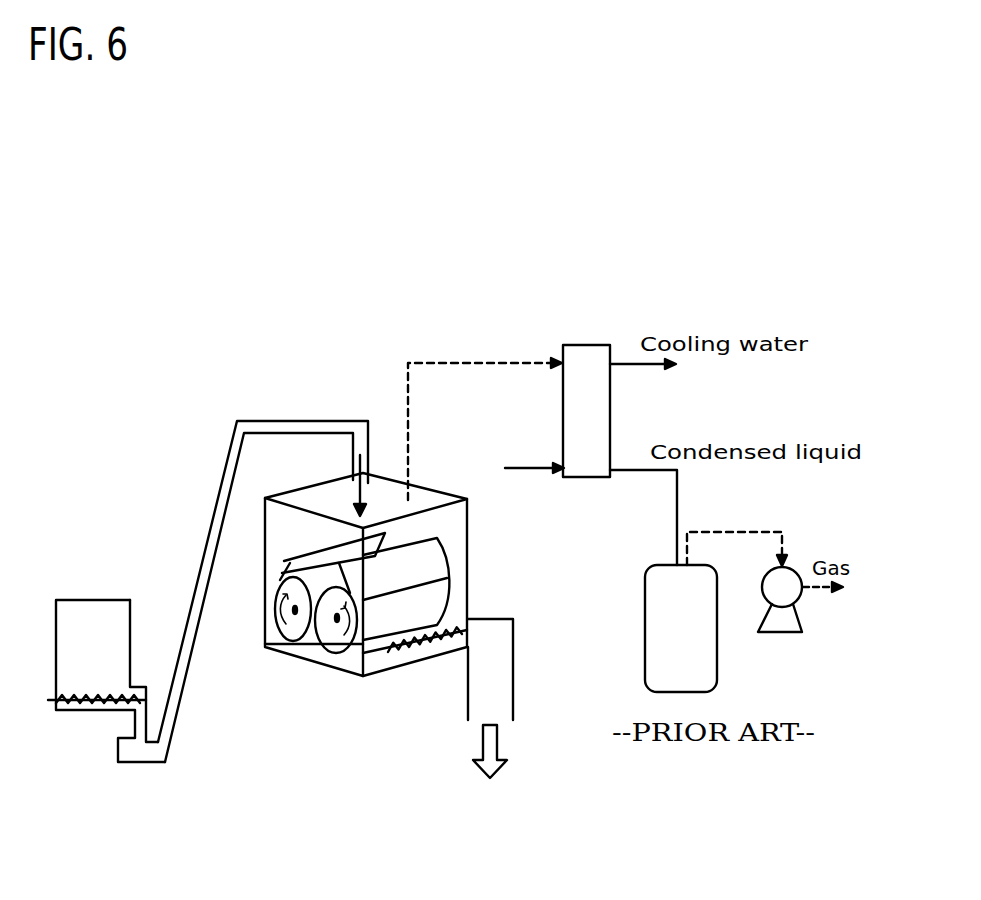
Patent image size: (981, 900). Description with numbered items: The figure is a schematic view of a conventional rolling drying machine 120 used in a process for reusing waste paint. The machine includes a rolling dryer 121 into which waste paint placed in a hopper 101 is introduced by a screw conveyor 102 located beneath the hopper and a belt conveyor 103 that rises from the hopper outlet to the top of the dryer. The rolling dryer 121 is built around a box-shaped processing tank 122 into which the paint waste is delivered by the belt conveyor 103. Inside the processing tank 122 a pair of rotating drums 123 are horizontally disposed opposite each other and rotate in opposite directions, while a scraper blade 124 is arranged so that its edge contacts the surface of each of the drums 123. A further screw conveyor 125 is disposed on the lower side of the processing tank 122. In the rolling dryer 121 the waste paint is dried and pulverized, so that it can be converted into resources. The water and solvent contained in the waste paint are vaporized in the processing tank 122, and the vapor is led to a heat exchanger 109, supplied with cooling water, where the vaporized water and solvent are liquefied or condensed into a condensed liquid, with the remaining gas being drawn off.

The hopper 101 is at (84, 606).
The screw conveyor 102 is at (74, 706).
The belt conveyor 103 is at (200, 567).
The heat exchanger 109 is at (588, 340).
The rolling drying machine 120 is at (393, 284).
The rolling dryer 121 is at (290, 683).
The processing tank 122 is at (470, 572).
The rotating drums 123 is at (277, 628).
The scraper blade 124 is at (305, 562).
The screw conveyor 125 is at (422, 657).